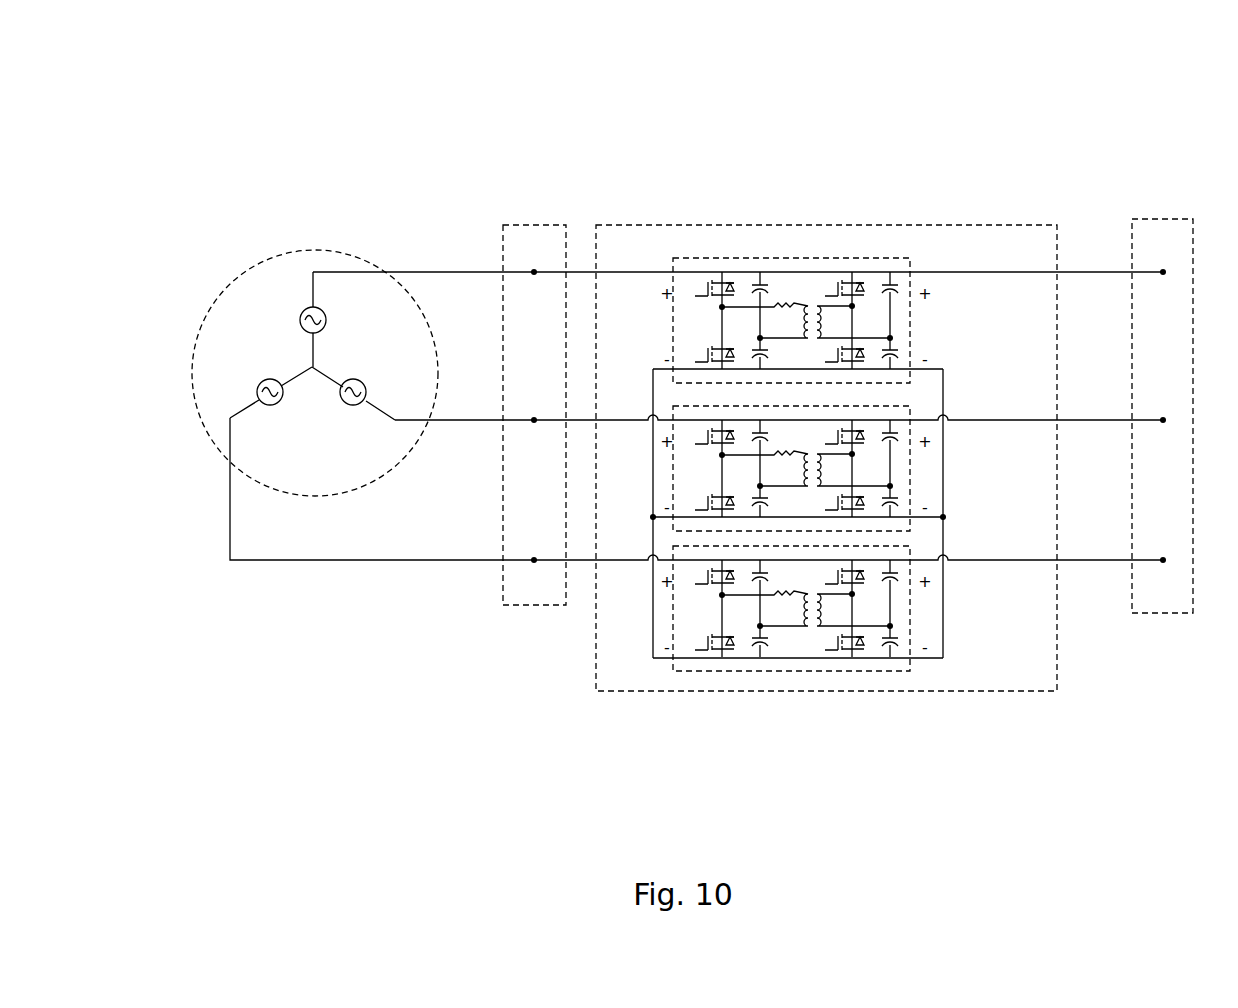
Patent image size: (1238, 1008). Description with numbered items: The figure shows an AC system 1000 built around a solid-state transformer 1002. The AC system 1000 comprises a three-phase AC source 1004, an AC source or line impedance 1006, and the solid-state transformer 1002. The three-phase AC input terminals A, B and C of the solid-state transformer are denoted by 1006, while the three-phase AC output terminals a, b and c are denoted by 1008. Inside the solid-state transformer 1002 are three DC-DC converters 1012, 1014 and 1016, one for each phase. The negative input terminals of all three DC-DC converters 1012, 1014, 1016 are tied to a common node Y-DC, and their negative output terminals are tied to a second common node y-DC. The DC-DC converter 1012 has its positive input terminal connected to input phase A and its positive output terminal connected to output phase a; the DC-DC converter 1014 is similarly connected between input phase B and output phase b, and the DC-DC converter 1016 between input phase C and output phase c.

The AC system 1000 is at (266, 86).
The solid-state transformer 1002 is at (740, 220).
The three-phase AC source 1004 is at (196, 309).
The three-phase AC input terminals 1006 is at (523, 220).
The three-phase AC output terminals 1008 is at (1161, 214).
The DC-DC converter 1012 is at (914, 325).
The DC-DC converter 1014 is at (914, 453).
The DC-DC converter 1016 is at (914, 608).